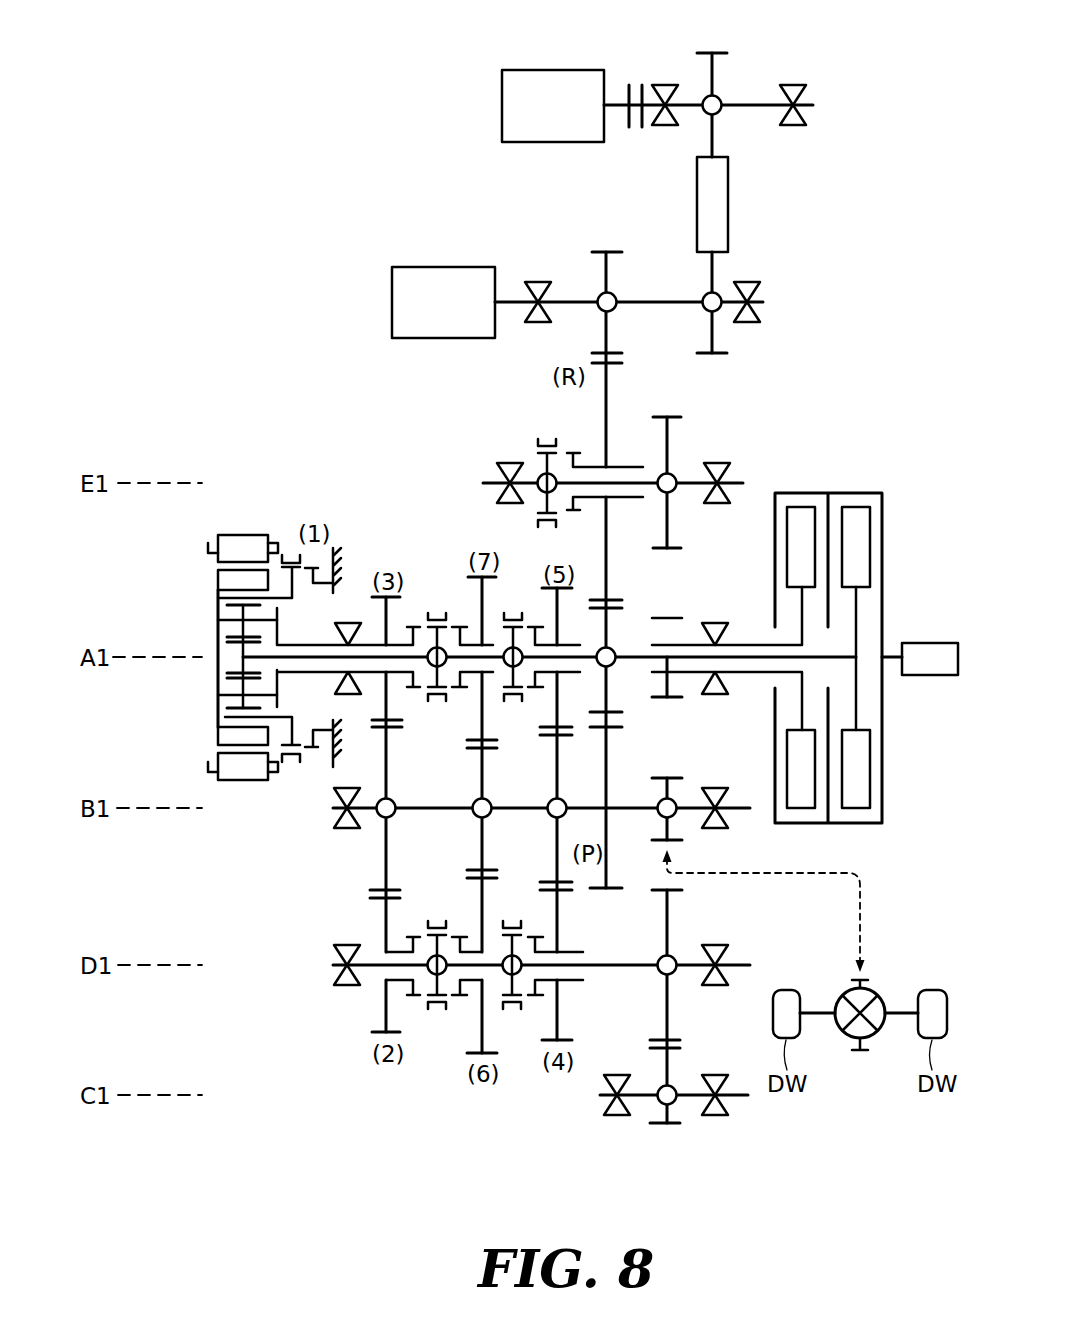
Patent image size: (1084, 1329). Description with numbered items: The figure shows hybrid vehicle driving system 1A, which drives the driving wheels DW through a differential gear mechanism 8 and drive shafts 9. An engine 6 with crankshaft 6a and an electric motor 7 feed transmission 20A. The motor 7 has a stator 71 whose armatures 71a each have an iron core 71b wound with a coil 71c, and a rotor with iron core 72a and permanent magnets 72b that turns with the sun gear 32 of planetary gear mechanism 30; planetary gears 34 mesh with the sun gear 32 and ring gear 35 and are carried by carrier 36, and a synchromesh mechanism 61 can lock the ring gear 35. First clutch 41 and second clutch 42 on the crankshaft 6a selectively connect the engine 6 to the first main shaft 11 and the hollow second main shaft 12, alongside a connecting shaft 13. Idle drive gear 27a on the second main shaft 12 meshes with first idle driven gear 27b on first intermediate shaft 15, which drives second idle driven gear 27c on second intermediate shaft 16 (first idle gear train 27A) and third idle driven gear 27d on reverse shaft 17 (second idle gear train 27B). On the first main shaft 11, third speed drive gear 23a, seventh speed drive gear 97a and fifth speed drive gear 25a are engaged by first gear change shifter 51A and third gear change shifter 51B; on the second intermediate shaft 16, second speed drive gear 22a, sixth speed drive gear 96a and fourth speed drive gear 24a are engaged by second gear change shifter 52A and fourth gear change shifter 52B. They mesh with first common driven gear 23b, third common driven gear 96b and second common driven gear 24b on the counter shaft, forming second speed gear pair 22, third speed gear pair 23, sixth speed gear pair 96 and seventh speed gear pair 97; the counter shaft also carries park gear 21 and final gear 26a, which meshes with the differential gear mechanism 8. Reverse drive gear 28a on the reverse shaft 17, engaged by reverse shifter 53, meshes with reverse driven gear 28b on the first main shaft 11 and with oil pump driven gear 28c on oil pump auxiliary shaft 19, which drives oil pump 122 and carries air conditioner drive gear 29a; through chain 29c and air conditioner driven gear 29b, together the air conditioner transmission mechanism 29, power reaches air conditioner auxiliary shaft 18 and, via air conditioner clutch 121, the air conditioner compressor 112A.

The hybrid vehicle driving system 1A is at (880, 400).
The internal combustion engine 6 is at (932, 643).
The crankshaft 6a is at (890, 655).
The electric motor 7 is at (216, 673).
The differential gear mechanism 8 is at (878, 998).
The drive shafts 9 is at (820, 1016).
The first main shaft 11 is at (746, 673).
The second main shaft 12 is at (742, 643).
The connecting shaft 13 is at (380, 676).
The first intermediate shaft 15 is at (640, 1100).
The second intermediate shaft 16 is at (640, 962).
The reverse shaft 17 is at (538, 480).
The air conditioner auxiliary shaft 18 is at (750, 108).
The oil pump auxiliary shaft 19 is at (656, 300).
The transmission 20A is at (355, 386).
The park gear 21 is at (606, 863).
The second speed gear pair 22 is at (400, 865).
The second speed drive gear 22a is at (372, 1034).
The third speed gear pair 23 is at (405, 745).
The third speed drive gear 23a is at (378, 595).
The first common driven gear 23b is at (380, 733).
The fourth speed drive gear 24a is at (566, 893).
The second common driven gear 24b is at (565, 738).
The fifth speed drive gear 25a is at (558, 592).
The final gear 26a is at (660, 778).
The idle drive gear 27a is at (673, 699).
The first idle driven gear 27b is at (670, 1126).
The second idle driven gear 27c is at (675, 1040).
The third idle driven gear 27d is at (668, 417).
The first idle gear train 27A is at (692, 908).
The second idle gear train 27B is at (713, 434).
The reverse drive gear 28a is at (607, 365).
The reverse driven gear 28b is at (610, 612).
The oil pump driven gear 28c is at (606, 252).
The air conditioner transmission mechanism 29 is at (760, 192).
The air conditioner drive gear 29a is at (725, 353).
The air conditioner driven gear 29b is at (713, 53).
The chain 29c is at (728, 222).
The planetary gear mechanism 30 is at (205, 658).
The sun gear 32 is at (230, 650).
The planetary gears 34 is at (230, 607).
The ring gear 35 is at (233, 718).
The carrier 36 is at (280, 632).
The first clutch 41 is at (856, 506).
The second clutch 42 is at (801, 506).
The first gear change shifter 51A is at (432, 606).
The third gear change shifter 51B is at (513, 606).
The second gear change shifter 52A is at (433, 1015).
The fourth gear change shifter 52B is at (513, 1015).
The reverse shifter 53 is at (540, 425).
The synchromesh mechanism 61 is at (290, 770).
The stator 71 is at (215, 535).
The armatures 71a is at (301, 880).
The iron core 71b is at (243, 768).
The coil 71c is at (213, 775).
The iron core 72a is at (232, 580).
The permanent magnets 72b is at (243, 736).
The sixth speed gear pair 96 is at (500, 858).
The sixth speed drive gear 96a is at (495, 880).
The third common driven gear 96b is at (478, 750).
The seventh speed gear pair 97 is at (505, 748).
The seventh speed drive gear 97a is at (478, 575).
The air conditioner compressor 112A is at (502, 105).
The air conditioner clutch 121 is at (676, 68).
The oil pump 122 is at (440, 267).